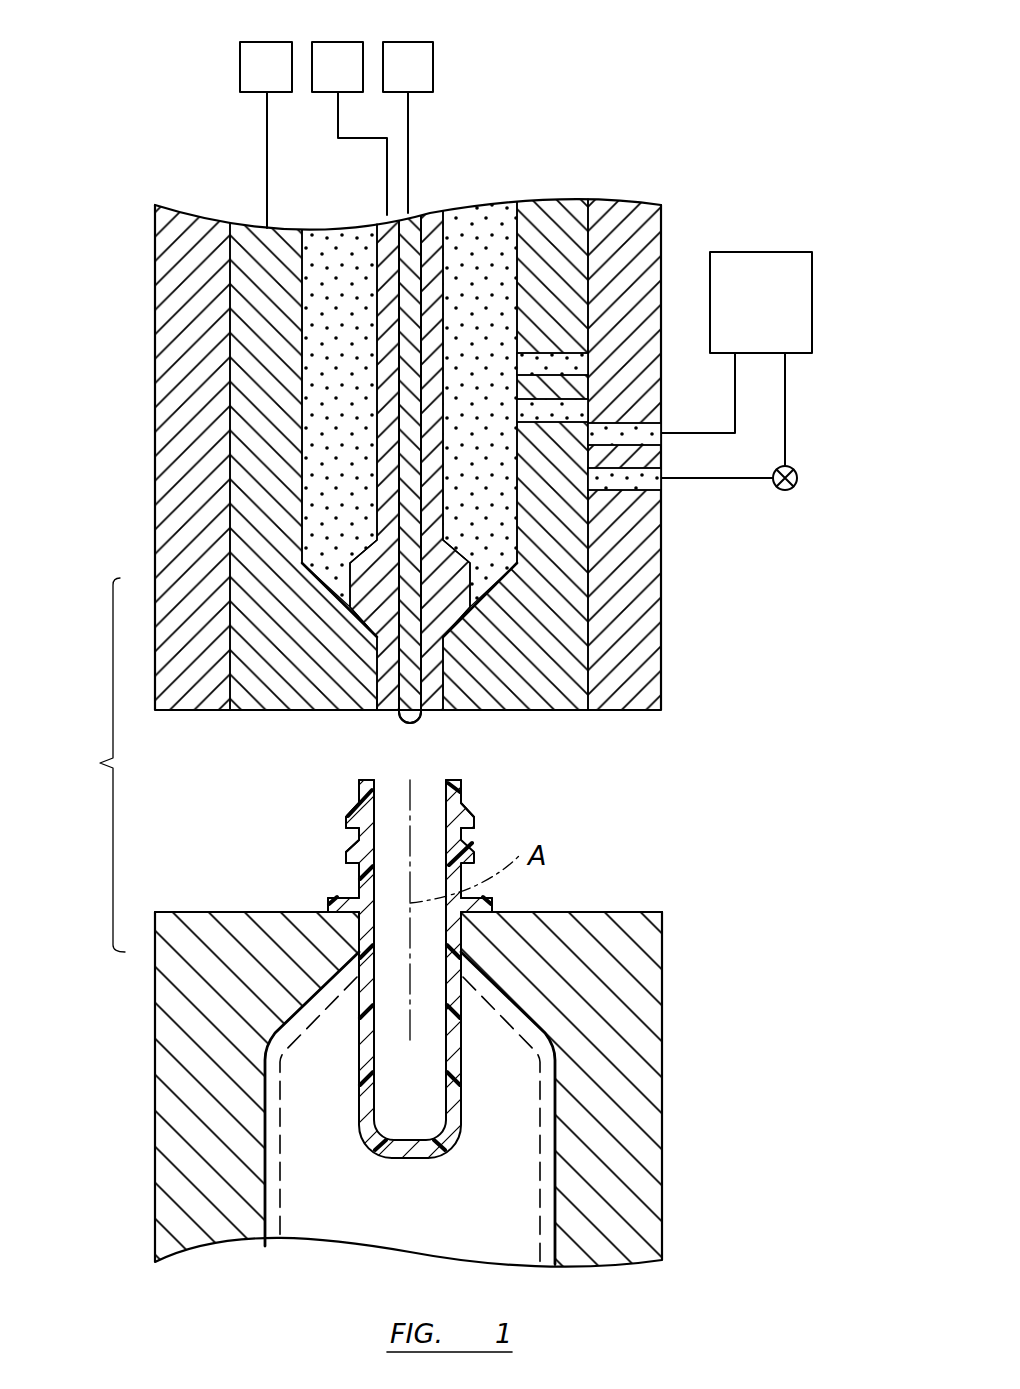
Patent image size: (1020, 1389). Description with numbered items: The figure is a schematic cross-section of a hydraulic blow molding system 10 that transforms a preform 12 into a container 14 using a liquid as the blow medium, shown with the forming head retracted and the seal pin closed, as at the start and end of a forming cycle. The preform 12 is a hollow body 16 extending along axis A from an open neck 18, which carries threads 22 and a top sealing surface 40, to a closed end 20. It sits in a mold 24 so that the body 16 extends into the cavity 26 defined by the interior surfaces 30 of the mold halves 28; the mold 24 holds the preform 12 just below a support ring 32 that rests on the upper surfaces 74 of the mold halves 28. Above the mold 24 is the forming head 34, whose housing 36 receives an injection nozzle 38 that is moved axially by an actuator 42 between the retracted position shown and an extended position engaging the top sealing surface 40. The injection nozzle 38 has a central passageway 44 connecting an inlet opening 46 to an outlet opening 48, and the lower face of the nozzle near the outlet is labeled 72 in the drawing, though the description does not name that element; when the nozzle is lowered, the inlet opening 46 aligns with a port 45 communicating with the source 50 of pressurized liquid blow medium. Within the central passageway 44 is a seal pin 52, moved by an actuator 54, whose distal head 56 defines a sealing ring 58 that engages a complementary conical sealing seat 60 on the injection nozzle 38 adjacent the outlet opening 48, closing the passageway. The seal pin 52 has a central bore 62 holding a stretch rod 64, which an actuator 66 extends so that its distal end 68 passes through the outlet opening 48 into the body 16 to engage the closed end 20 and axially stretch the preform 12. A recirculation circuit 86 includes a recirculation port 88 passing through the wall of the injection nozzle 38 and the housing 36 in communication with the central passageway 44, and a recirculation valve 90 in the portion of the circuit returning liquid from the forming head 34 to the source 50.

The hydraulic blow molding system 10 is at (97, 765).
The preform 12 is at (484, 1043).
The container 14 is at (552, 1090).
The body 16 is at (363, 963).
The neck 18 is at (358, 872).
The closed end 20 is at (392, 1158).
The threads 22 is at (348, 820).
The mold 24 is at (672, 1092).
The cavity 26 is at (324, 1090).
The mold halves 28 is at (205, 1140).
The interior surfaces 30 is at (278, 1192).
The support ring 32 is at (340, 900).
The forming head 34 is at (143, 120).
The housing 36 is at (180, 257).
The injection nozzle 38 is at (218, 320).
The top sealing surface 40 is at (360, 780).
The actuator 42 is at (260, 70).
The central passageway 44 is at (488, 224).
The port 45 is at (625, 430).
The inlet opening 46 is at (548, 363).
The outlet opening 48 is at (389, 703).
The source 50 is at (753, 285).
The seal pin 52 is at (383, 433).
The actuator 54 is at (340, 58).
The head 56 is at (455, 605).
The sealing ring 58 is at (458, 617).
The sealing seat 60 is at (328, 578).
The central bore 62 is at (400, 385).
The stretch rod 64 is at (405, 497).
The actuator 66 is at (413, 70).
The distal end 68 is at (412, 720).
The nozzle face 72 is at (450, 712).
The upper surfaces 74 is at (625, 910).
The recirculation circuit 86 is at (745, 490).
The recirculation port 88 is at (640, 495).
The recirculation valve 90 is at (800, 472).